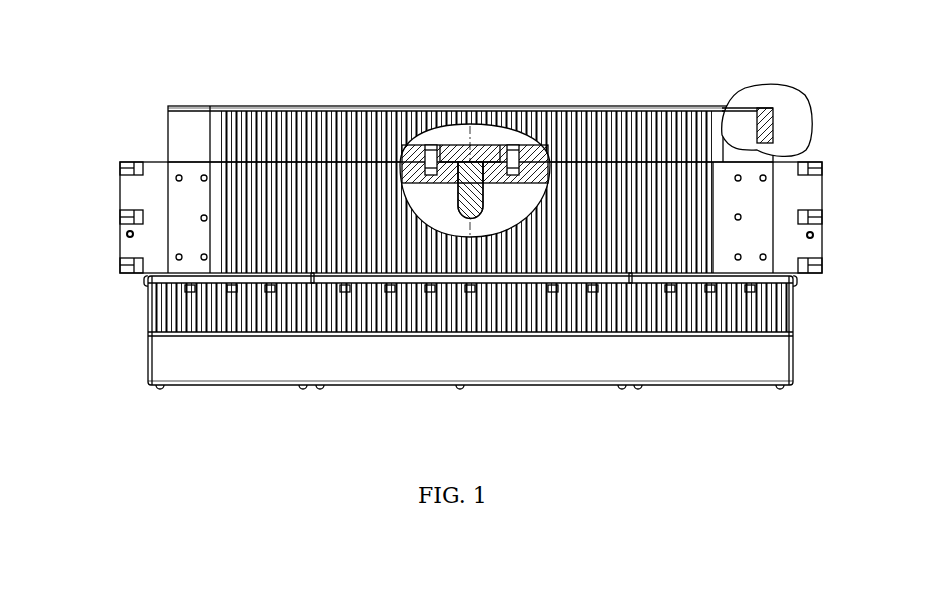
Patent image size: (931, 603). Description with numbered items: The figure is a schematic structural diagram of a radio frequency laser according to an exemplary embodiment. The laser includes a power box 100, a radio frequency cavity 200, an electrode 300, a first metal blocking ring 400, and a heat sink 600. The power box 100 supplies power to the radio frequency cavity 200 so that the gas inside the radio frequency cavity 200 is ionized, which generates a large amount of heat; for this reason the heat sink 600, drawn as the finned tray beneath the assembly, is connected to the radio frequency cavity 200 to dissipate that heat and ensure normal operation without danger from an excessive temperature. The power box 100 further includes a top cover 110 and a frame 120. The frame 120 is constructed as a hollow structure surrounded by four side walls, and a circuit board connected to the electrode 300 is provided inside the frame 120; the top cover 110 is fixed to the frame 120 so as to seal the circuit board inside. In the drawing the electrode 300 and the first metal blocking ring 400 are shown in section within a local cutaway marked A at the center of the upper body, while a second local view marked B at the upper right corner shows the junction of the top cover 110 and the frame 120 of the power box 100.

The power box 100 is at (404, 146).
The top cover 110 is at (668, 107).
The frame 120 is at (718, 107).
The radio frequency cavity 200 is at (220, 202).
The electrode 300 is at (466, 108).
The first metal blocking ring 400 is at (512, 108).
The heat sink 600 is at (158, 325).
The detail region A is at (467, 137).
The detail region B is at (775, 87).